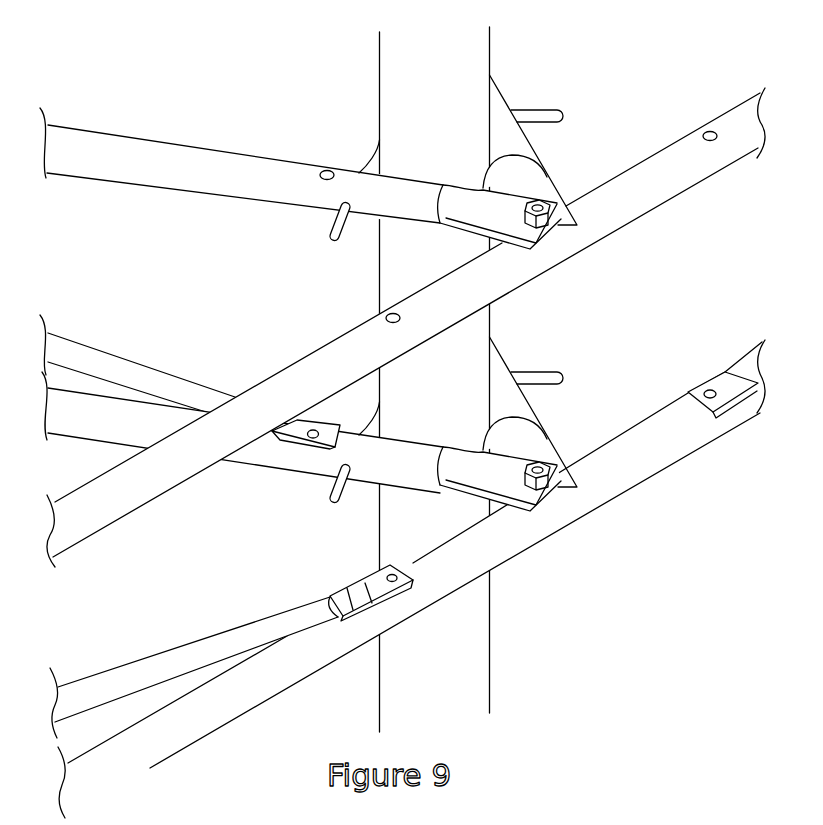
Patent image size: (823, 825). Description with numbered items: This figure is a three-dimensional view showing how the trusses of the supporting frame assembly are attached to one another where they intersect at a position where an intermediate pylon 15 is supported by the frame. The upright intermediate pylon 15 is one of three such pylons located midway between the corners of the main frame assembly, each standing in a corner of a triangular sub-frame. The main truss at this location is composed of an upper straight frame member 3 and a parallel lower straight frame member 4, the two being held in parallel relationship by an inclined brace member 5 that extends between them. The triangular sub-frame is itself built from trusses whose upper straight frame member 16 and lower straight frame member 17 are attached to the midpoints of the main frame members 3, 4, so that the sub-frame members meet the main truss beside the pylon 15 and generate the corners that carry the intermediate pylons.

The upper straight frame member 3 is at (125, 498).
The lower straight frame member 4 is at (567, 506).
The inclined brace member 5 is at (250, 615).
The intermediate pylon 15 is at (387, 280).
The upper straight frame member of sub-frame truss 16 is at (183, 162).
The lower straight frame member of sub-frame truss 17 is at (125, 415).